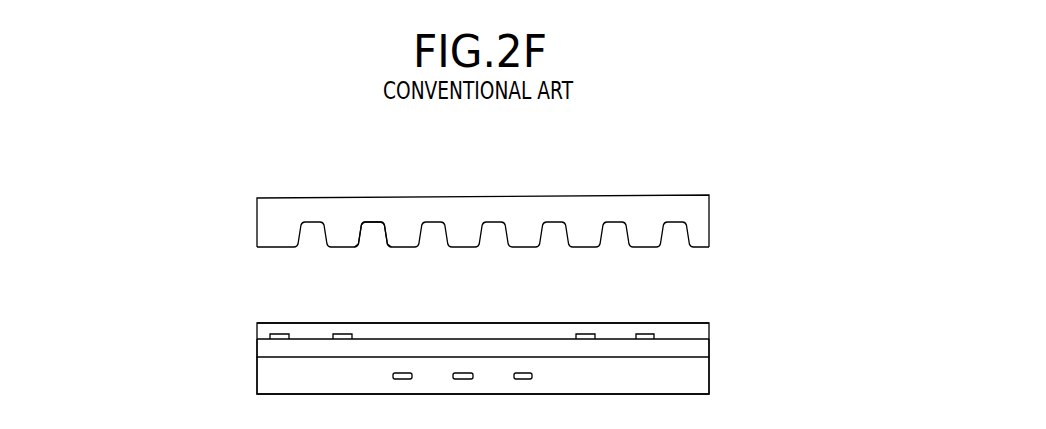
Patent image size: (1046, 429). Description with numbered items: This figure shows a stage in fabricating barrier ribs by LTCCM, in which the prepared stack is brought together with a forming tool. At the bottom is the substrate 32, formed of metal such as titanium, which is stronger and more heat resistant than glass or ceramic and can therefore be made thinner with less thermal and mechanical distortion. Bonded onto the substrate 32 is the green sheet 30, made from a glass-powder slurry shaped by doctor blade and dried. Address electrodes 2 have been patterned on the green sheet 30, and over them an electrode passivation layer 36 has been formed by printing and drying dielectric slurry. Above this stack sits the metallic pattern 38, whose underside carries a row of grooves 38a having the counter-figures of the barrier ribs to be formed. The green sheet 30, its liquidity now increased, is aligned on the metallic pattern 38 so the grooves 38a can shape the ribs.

The metallic pattern 38 is at (577, 193).
The groove 38a is at (378, 224).
The address electrode 2 is at (647, 332).
The electrode passivation layer 36 is at (697, 327).
The green sheet 30 is at (697, 345).
The substrate 32 is at (697, 372).